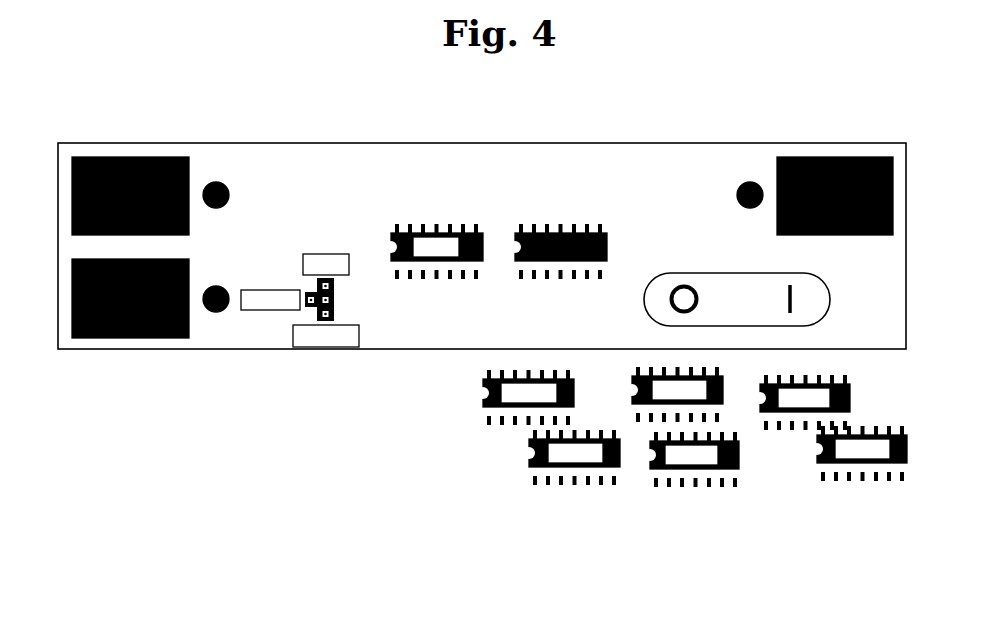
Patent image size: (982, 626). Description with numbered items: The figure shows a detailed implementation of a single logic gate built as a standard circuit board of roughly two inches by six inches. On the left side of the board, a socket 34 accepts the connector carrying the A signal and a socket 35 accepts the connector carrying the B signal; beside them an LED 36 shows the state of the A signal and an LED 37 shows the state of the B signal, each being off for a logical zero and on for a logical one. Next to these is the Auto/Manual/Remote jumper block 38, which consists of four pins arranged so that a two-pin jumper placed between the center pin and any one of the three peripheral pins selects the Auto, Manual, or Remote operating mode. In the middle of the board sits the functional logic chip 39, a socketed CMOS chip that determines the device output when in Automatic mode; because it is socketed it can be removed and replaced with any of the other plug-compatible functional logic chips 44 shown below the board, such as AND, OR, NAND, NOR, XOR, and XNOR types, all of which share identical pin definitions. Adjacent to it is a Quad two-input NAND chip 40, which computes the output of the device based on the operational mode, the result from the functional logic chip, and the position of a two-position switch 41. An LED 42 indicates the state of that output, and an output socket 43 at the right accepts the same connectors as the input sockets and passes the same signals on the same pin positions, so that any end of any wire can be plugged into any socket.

The socket 34 is at (121, 172).
The socket 35 is at (123, 330).
The LED 36 is at (184, 158).
The LED 37 is at (187, 344).
The Auto/Manual/Remote jumper block 38 is at (297, 328).
The functional logic chip 39 is at (405, 194).
The Quad 2-input NAND chip 40 is at (527, 194).
The two-position switch 41 is at (698, 217).
The LED 42 is at (720, 158).
The output socket 43 is at (833, 172).
The functional logic chips 44 is at (646, 427).